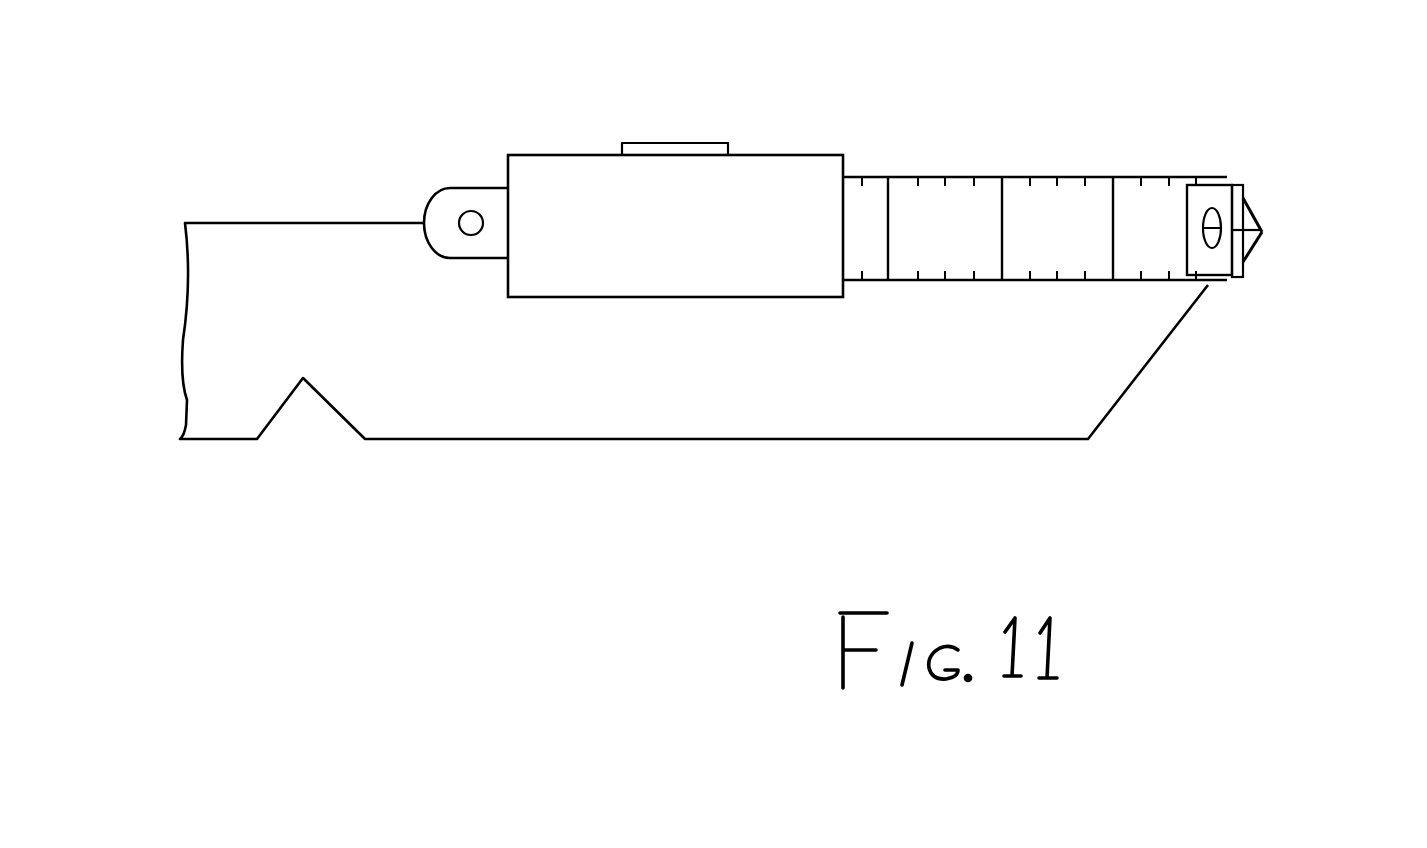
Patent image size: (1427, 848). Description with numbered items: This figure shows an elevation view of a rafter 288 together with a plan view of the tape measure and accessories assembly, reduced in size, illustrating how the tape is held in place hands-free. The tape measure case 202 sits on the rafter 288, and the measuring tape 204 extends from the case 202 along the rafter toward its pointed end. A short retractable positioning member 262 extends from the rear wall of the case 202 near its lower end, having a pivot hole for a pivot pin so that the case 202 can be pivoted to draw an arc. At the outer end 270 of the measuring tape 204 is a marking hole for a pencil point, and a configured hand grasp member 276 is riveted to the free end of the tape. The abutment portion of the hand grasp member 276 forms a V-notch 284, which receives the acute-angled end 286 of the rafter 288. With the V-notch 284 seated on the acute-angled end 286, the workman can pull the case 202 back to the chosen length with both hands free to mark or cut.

The tape measure case 202 is at (570, 154).
The measuring tape 204 is at (1073, 176).
The retractable positioning member 262 is at (450, 187).
The outer end 270 is at (1230, 282).
The hand grasp member 276 is at (1258, 218).
The V-notch 284 is at (1255, 248).
The acute-angled end 286 is at (1260, 232).
The rafter 288 is at (737, 440).